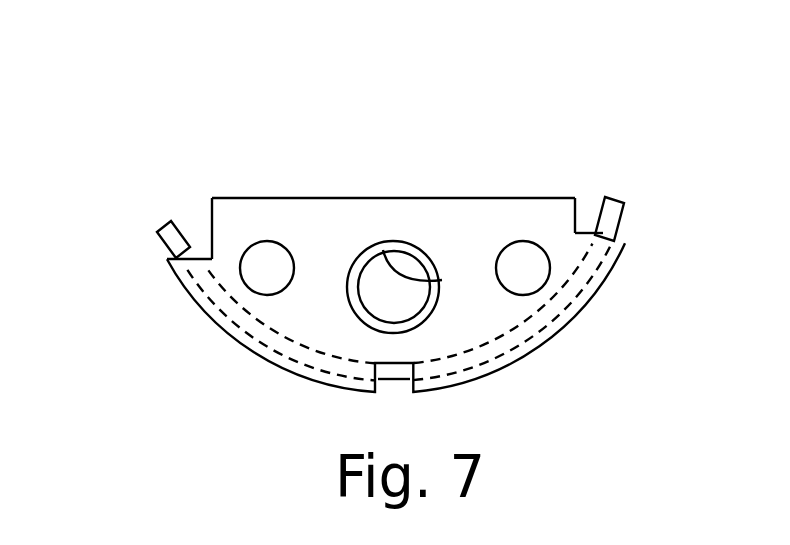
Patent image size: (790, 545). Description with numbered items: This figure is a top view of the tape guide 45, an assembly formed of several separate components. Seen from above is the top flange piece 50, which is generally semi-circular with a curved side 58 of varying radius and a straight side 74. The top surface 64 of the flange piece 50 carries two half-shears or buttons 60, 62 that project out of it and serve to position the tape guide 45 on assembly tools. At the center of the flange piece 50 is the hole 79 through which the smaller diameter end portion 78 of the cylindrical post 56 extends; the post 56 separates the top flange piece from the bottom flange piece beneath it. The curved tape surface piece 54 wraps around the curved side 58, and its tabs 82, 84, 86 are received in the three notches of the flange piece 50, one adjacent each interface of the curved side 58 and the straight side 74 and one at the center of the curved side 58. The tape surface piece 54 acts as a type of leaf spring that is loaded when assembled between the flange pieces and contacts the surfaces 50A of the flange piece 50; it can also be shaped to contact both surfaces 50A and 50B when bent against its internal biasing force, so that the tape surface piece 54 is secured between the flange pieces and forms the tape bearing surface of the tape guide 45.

The tape guide 45 is at (483, 98).
The top flange piece 50 is at (236, 183).
The surface of the flange piece 50A is at (203, 258).
The surface of the flange piece 50B is at (210, 250).
The tape surface piece 54 is at (283, 352).
The post 56 is at (404, 237).
The curved side 58 is at (600, 292).
The button 60 is at (525, 258).
The button 62 is at (268, 265).
The top surface 64 is at (478, 313).
The straight side 74 is at (463, 198).
The smaller diameter end portion 78 is at (360, 253).
The hole 79 is at (383, 250).
The tab 82 is at (624, 209).
The tab 84 is at (396, 379).
The tab 86 is at (163, 242).